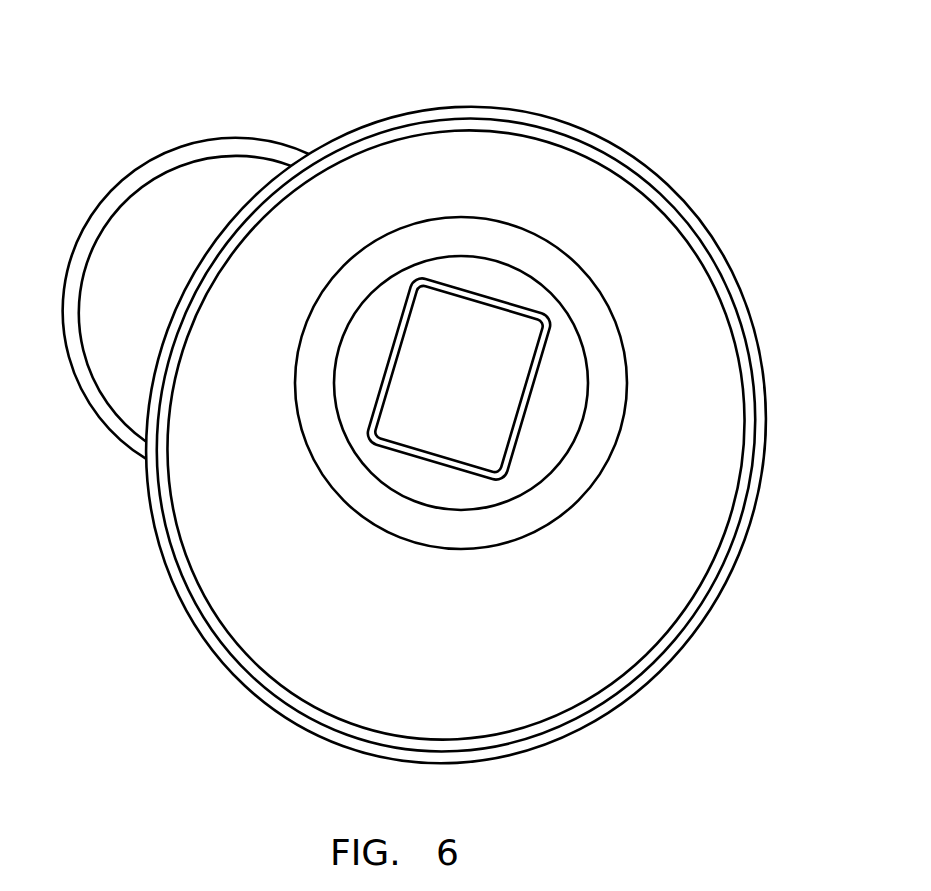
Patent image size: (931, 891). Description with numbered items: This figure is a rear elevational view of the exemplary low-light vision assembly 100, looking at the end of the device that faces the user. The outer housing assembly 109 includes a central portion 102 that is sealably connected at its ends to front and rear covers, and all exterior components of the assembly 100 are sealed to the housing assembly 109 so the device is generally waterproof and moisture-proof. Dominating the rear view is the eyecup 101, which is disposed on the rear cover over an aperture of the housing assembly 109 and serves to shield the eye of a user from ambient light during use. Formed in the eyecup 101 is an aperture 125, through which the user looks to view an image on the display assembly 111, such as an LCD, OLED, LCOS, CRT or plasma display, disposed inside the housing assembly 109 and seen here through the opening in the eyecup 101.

The low-light vision assembly 100 is at (643, 140).
The eyecup 101 is at (590, 639).
The central portion 102 is at (163, 230).
The housing assembly 109 is at (178, 135).
The display assembly 111 is at (497, 388).
The aperture 125 is at (492, 282).